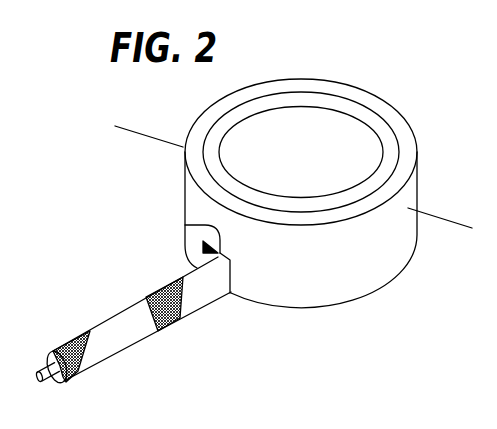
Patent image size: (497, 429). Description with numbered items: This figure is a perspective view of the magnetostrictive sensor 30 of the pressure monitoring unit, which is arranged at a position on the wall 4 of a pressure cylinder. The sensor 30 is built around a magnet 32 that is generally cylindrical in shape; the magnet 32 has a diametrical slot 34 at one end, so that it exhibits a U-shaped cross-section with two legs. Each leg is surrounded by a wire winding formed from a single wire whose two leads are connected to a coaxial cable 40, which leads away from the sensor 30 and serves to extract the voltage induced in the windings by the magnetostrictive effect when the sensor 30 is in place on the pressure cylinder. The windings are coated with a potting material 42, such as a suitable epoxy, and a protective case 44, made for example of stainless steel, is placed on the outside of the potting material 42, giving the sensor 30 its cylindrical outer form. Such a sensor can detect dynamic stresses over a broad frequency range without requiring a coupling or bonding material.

The magnetostrictive sensor 30 is at (331, 170).
The magnet 32 is at (315, 166).
The diametrical slot 34 is at (185, 225).
The coaxial cable 40 is at (130, 346).
The potting material 42 is at (373, 120).
The protective case 44 is at (403, 140).
The wall 4 is at (125, 116).